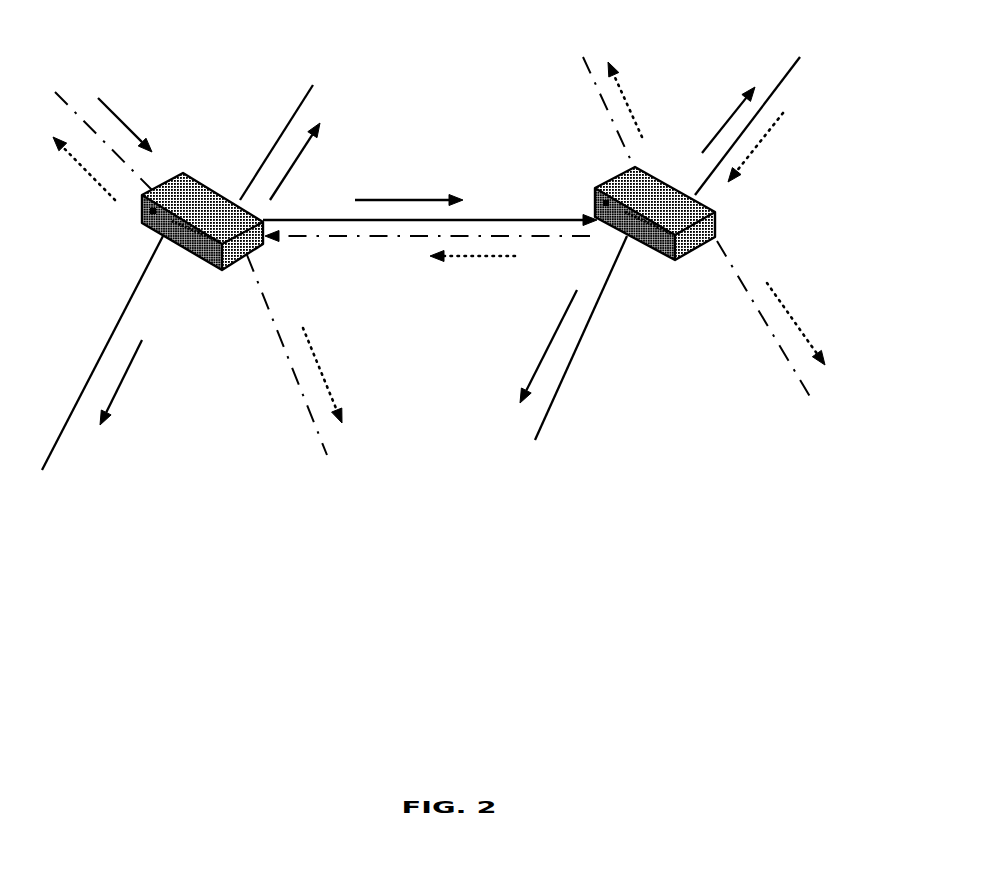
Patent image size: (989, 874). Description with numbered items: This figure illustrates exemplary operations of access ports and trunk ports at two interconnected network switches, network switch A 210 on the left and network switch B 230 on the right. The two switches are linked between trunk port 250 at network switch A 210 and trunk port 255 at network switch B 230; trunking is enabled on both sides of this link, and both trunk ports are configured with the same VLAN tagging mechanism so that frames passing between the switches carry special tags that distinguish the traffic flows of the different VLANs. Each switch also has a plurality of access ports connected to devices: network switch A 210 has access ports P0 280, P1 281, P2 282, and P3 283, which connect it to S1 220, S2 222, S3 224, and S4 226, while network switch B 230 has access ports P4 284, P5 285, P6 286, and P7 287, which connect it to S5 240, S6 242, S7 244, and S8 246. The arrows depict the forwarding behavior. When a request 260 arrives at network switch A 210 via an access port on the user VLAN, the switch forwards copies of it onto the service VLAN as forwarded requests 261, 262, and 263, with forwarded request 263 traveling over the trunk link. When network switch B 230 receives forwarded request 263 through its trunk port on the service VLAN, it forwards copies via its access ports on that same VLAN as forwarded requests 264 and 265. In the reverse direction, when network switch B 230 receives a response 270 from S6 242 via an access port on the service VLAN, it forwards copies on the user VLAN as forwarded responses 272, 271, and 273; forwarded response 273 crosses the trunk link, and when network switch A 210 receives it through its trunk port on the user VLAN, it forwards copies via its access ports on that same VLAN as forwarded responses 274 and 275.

The network switch A 210 is at (183, 339).
The network switch B 230 is at (650, 331).
The S1 220 is at (40, 74).
The S2 222 is at (325, 81).
The S3 224 is at (40, 519).
The S4 226 is at (310, 511).
The S5 240 is at (523, 47).
The S6 242 is at (808, 54).
The S7 244 is at (525, 492).
The S8 246 is at (795, 484).
The trunk port 250 is at (298, 302).
The trunk port 255 is at (550, 209).
The access port P0 280 is at (150, 261).
The access port P1 281 is at (180, 181).
The access port P2 282 is at (244, 192).
The access port P3 283 is at (287, 299).
The access port P4 284 is at (672, 164).
The access port P5 285 is at (709, 187).
The access port P6 286 is at (750, 254).
The access port P7 287 is at (615, 274).
The request 260 is at (131, 119).
The forwarded request 261 is at (310, 166).
The forwarded request 262 is at (133, 399).
The forwarded request 263 is at (395, 189).
The forwarded request 264 is at (676, 124).
The forwarded request 265 is at (506, 346).
The response 270 is at (766, 161).
The forwarded response 271 is at (808, 324).
The forwarded response 272 is at (631, 96).
The forwarded response 273 is at (460, 285).
The forwarded response 274 is at (45, 189).
The forwarded response 275 is at (330, 379).